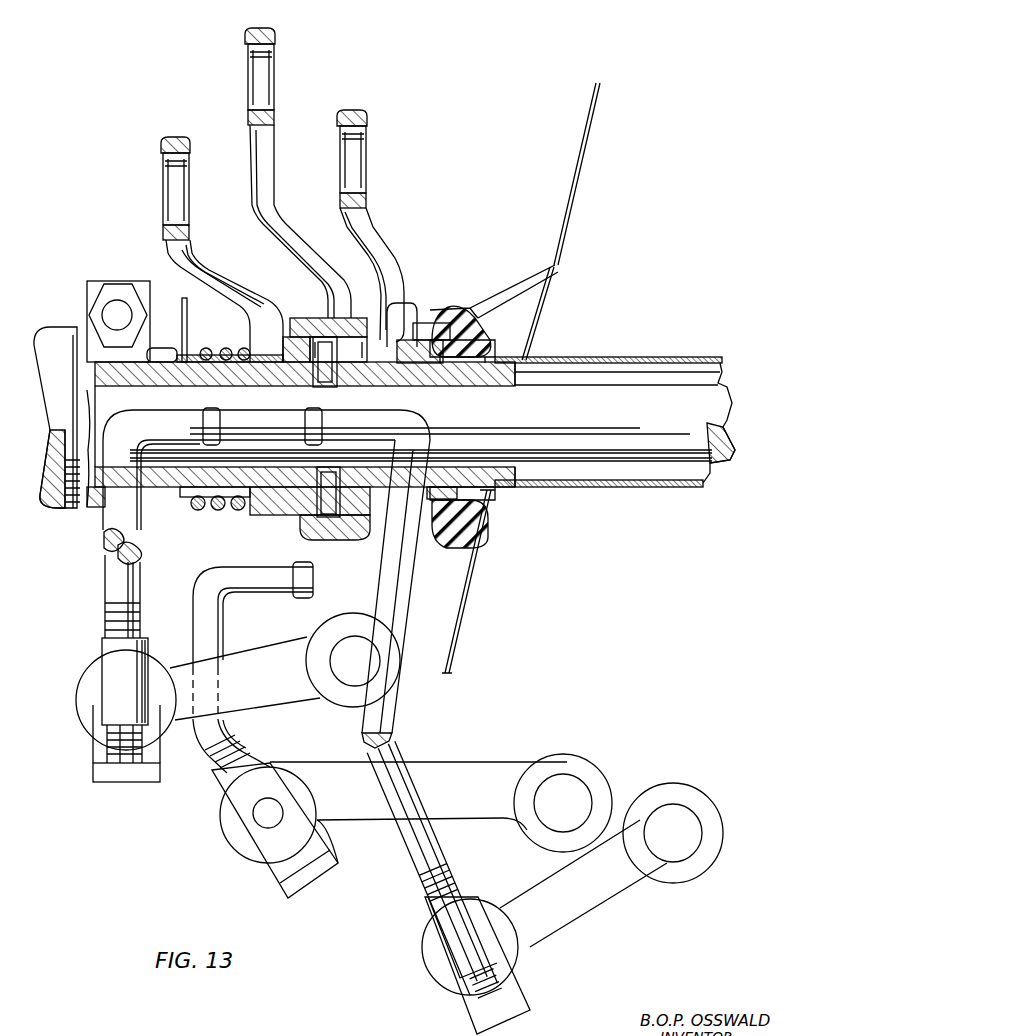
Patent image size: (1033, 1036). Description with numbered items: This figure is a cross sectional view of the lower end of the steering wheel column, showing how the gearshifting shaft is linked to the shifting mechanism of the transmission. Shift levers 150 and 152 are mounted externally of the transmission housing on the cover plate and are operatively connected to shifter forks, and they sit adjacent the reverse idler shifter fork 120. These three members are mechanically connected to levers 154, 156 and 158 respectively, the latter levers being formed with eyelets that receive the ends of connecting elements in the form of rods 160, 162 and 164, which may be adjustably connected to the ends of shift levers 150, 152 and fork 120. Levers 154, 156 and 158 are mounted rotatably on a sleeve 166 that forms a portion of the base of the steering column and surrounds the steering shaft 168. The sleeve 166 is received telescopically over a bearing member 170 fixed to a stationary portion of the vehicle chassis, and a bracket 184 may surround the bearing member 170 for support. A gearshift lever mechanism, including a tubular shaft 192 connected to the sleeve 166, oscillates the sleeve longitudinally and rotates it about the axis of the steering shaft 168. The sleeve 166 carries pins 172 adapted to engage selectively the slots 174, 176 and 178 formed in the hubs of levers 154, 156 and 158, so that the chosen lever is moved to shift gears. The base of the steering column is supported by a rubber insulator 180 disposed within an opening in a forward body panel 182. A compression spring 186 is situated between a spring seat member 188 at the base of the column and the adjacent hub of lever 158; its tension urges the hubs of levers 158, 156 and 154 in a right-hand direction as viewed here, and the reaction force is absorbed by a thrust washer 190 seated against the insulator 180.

The reverse idler shifter fork 120 is at (530, 892).
The shift lever 150 is at (305, 645).
The shift lever 152 is at (470, 775).
The lever 154 is at (370, 250).
The lever 156 is at (318, 222).
The lever 158 is at (238, 228).
The rod 160 is at (385, 752).
The rod 162 is at (222, 618).
The rod 164 is at (108, 558).
The sleeve 166 is at (457, 378).
The steering shaft 168 is at (532, 410).
The bearing member 170 is at (252, 378).
The pins 172 is at (322, 383).
The slot 174 is at (396, 330).
The slot 176 is at (362, 330).
The slot 178 is at (300, 320).
The rubber insulator 180 is at (455, 322).
The forward body panel 182 is at (530, 285).
The bracket 184 is at (110, 320).
The compression spring 186 is at (226, 346).
The spring seat member 188 is at (185, 318).
The thrust washer 190 is at (440, 530).
The tubular shaft 192 is at (603, 357).